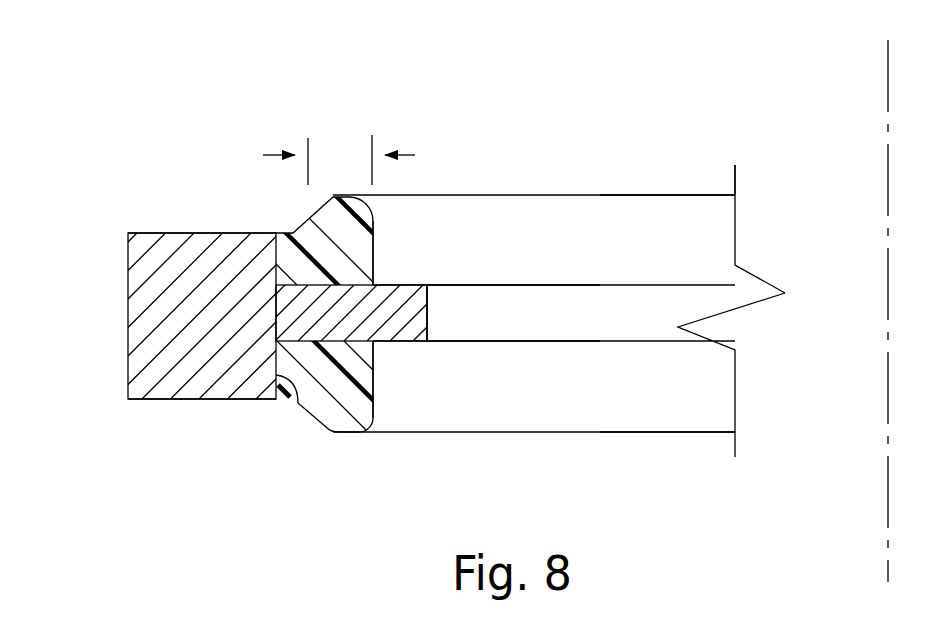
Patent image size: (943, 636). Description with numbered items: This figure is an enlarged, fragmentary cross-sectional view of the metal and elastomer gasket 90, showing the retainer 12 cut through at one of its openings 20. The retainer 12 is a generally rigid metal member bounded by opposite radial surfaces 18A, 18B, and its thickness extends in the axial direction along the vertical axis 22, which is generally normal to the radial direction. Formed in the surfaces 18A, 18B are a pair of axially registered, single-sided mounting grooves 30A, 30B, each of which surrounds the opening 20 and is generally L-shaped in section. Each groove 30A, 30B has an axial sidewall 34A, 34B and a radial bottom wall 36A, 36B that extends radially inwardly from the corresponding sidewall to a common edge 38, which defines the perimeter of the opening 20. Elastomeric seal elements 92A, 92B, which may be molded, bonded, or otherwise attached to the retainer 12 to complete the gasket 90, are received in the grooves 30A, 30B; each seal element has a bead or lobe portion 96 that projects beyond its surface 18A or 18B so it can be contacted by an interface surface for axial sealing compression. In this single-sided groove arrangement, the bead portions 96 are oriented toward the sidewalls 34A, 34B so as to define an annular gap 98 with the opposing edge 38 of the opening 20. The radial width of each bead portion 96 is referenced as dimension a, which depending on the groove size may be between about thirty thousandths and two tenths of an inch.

The retainer 12 is at (127, 290).
The radial surface 18A is at (163, 230).
The radial surface 18B is at (168, 402).
The axial sidewall 34A is at (293, 232).
The axial sidewall 34B is at (299, 404).
The mounting groove 30A is at (383, 278).
The mounting groove 30B is at (383, 353).
The radial bottom wall 36A is at (426, 272).
The radial bottom wall 36B is at (424, 354).
The common edge 38 is at (428, 302).
The opening 20 is at (531, 334).
The annular gap 98 is at (403, 286).
The gasket 90 is at (660, 92).
The seal element 92A is at (736, 225).
The seal element 92B is at (737, 384).
The bead portion 96 is at (657, 194).
The vertical axis 22 is at (888, 75).
The bead width a is at (339, 160).